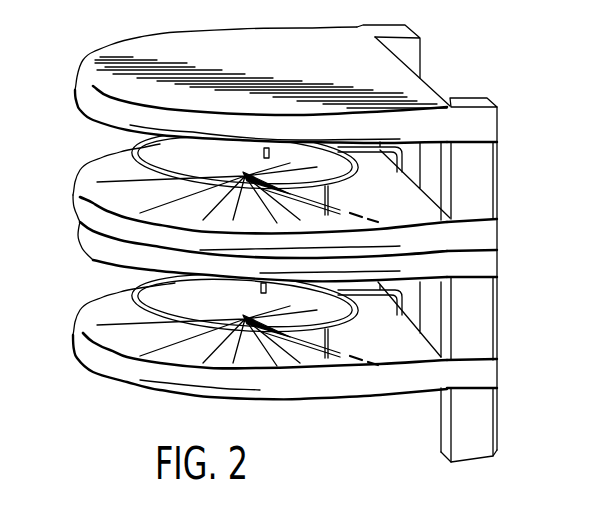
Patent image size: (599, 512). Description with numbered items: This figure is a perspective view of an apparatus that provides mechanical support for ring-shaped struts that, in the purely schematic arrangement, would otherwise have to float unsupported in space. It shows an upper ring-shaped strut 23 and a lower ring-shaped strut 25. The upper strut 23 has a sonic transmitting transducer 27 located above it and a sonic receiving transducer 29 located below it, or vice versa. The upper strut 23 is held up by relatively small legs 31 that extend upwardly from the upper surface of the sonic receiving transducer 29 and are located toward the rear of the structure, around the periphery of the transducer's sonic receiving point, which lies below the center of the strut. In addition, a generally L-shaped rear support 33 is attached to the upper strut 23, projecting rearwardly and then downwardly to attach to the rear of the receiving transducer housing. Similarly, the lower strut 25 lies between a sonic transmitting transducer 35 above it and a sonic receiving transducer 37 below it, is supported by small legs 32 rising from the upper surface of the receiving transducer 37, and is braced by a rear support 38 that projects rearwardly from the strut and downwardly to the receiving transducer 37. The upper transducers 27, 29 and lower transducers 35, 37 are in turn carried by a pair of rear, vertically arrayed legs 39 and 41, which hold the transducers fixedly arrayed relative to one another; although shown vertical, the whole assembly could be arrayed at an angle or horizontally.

The upper ring-shaped strut 23 is at (135, 143).
The lower ring-shaped strut 25 is at (140, 290).
The sonic transmitting transducer 27 is at (83, 95).
The sonic receiving transducer 29 is at (82, 200).
The legs 31 is at (262, 154).
The legs 32 is at (262, 289).
The rear support 33 is at (381, 161).
The sonic transmitting transducer 35 is at (85, 238).
The sonic receiving transducer 37 is at (90, 350).
The rear support 38 is at (379, 297).
The leg 39 is at (410, 58).
The leg 41 is at (465, 188).